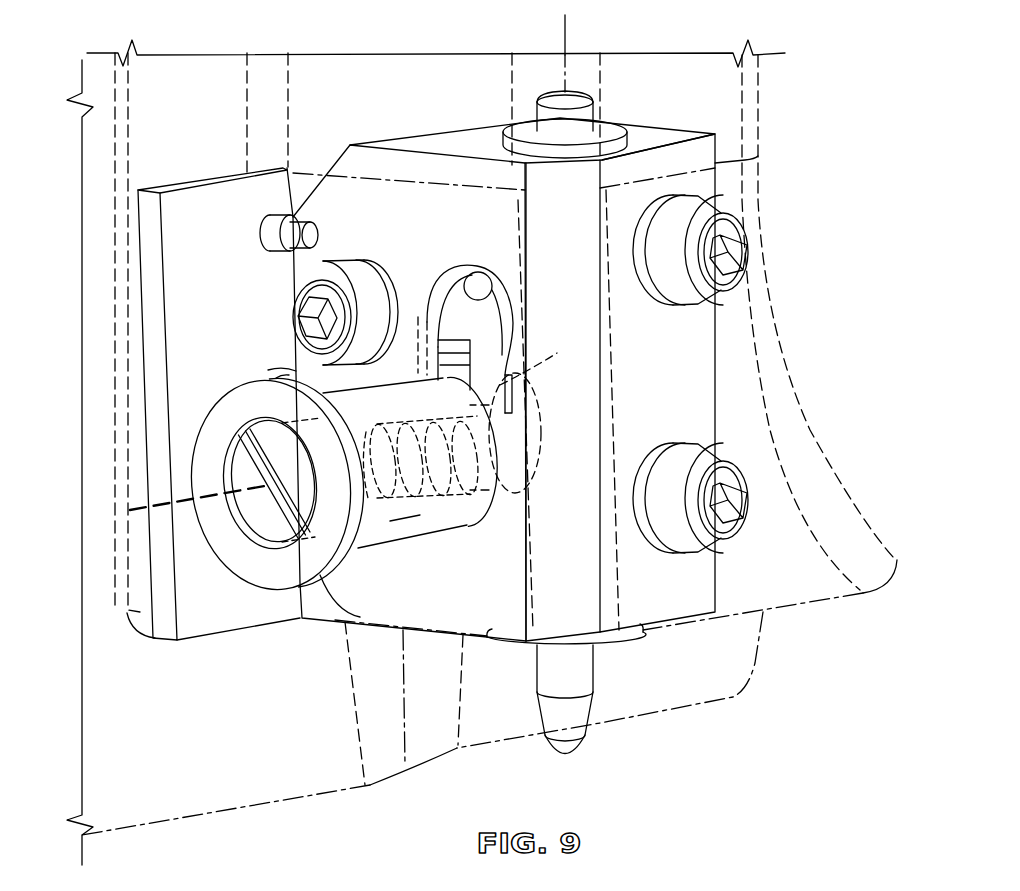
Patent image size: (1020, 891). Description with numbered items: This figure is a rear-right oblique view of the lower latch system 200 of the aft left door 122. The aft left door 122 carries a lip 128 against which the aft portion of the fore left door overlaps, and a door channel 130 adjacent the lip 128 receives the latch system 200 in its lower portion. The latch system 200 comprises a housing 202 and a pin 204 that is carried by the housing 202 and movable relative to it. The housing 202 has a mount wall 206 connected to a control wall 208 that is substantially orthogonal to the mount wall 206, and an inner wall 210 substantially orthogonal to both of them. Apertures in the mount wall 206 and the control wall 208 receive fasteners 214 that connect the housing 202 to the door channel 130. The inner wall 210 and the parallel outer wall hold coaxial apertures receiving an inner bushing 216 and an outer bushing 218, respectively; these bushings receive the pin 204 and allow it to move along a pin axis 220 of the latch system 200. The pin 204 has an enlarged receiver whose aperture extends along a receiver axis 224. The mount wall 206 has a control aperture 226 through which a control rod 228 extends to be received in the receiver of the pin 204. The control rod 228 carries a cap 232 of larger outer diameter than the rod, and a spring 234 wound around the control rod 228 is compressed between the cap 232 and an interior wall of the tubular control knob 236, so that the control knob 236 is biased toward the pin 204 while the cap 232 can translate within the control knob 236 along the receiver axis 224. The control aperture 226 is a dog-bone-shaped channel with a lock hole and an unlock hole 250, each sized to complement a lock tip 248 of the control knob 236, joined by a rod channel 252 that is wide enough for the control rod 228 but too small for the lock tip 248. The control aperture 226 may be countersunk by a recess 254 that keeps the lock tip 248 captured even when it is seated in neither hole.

The aft left door 122 is at (276, 805).
The lip 128 is at (707, 703).
The door channel 130 is at (762, 137).
The latch system 200 is at (404, 77).
The housing 202 is at (347, 147).
The pin 204 is at (590, 733).
The mount wall 206 is at (705, 372).
The control wall 208 is at (428, 165).
The inner wall 210 is at (478, 128).
The fasteners 214 is at (294, 310).
The inner bushing 216 is at (612, 123).
The outer bushing 218 is at (632, 645).
The pin axis 220 is at (567, 30).
The receiver axis 224 is at (208, 487).
The control aperture 226 is at (478, 317).
The control rod 228 is at (530, 378).
The cap 232 is at (265, 527).
The spring 234 is at (470, 525).
The control knob 236 is at (237, 387).
The lock tip 248 is at (533, 425).
The unlock hole 250 is at (480, 273).
The rod channel 252 is at (443, 382).
The recess 254 is at (423, 330).